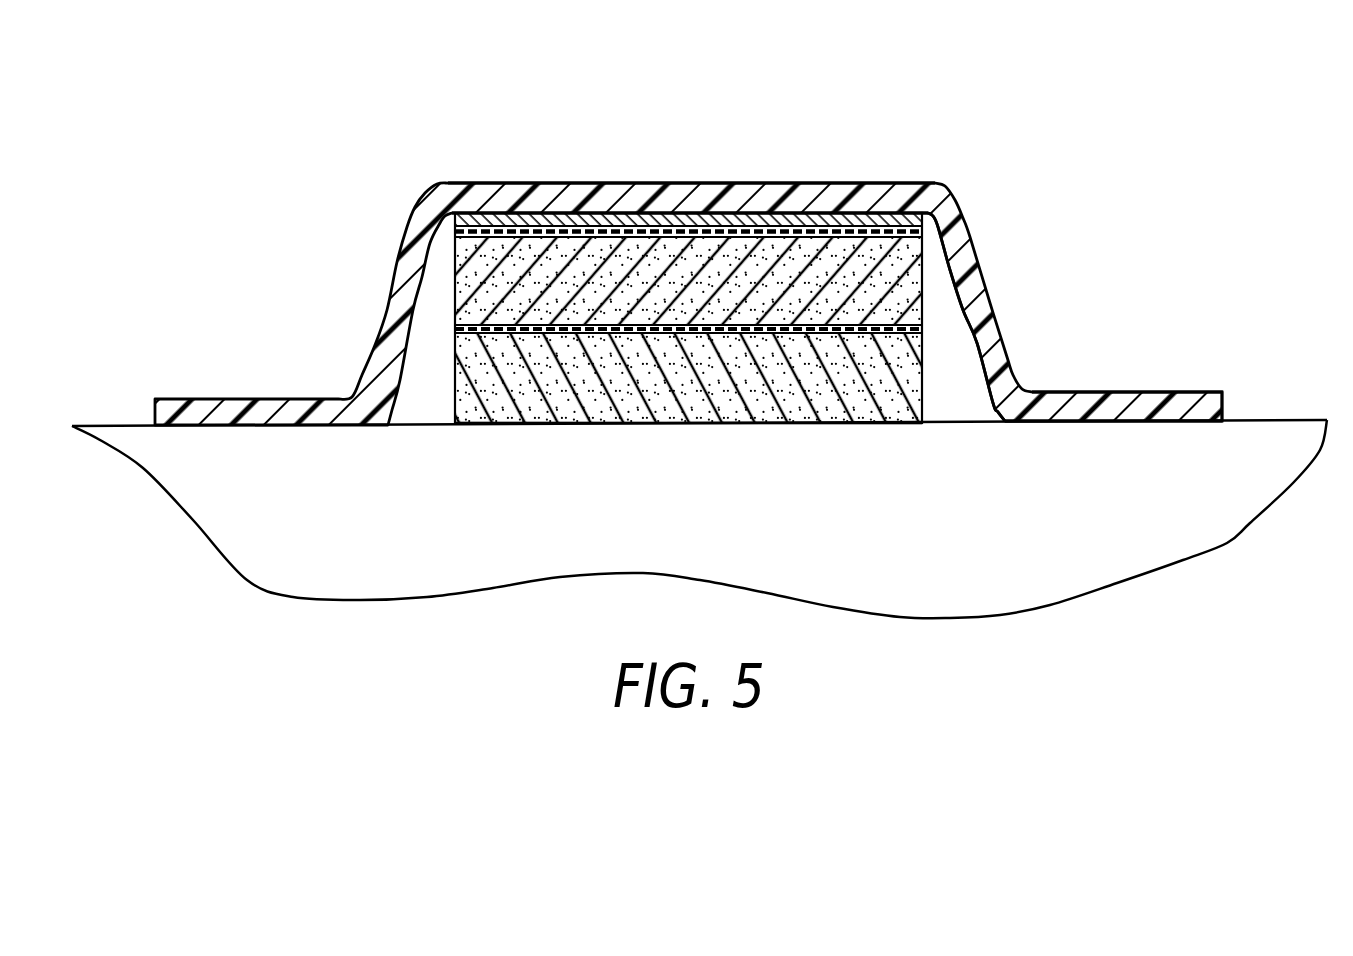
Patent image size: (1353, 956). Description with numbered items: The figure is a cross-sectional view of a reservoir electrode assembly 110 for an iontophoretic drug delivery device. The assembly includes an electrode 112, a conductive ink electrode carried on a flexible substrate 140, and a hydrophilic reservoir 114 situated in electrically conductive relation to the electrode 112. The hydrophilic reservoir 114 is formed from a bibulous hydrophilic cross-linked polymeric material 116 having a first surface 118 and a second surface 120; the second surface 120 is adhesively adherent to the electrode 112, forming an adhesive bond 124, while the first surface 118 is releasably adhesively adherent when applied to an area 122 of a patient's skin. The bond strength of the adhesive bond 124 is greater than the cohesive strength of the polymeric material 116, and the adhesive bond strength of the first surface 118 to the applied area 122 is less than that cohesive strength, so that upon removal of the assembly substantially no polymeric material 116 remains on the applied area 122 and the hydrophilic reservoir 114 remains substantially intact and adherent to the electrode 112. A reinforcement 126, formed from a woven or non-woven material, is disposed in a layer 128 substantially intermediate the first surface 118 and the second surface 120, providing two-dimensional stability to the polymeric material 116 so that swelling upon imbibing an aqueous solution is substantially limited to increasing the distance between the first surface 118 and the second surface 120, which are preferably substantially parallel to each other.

The reservoir electrode assembly 110 is at (1106, 128).
The electrode 112 is at (820, 183).
The hydrophilic reservoir 114 is at (905, 293).
The bibulous hydrophilic cross-linked polymeric material 116 is at (513, 224).
The first surface 118 is at (880, 423).
The second surface 120 is at (635, 183).
The applied area of patient's skin 122 is at (517, 518).
The adhesive bond 124 is at (453, 237).
The reinforcement 126 is at (455, 302).
The layer 128 is at (455, 330).
The flexible substrate 140 is at (1163, 392).